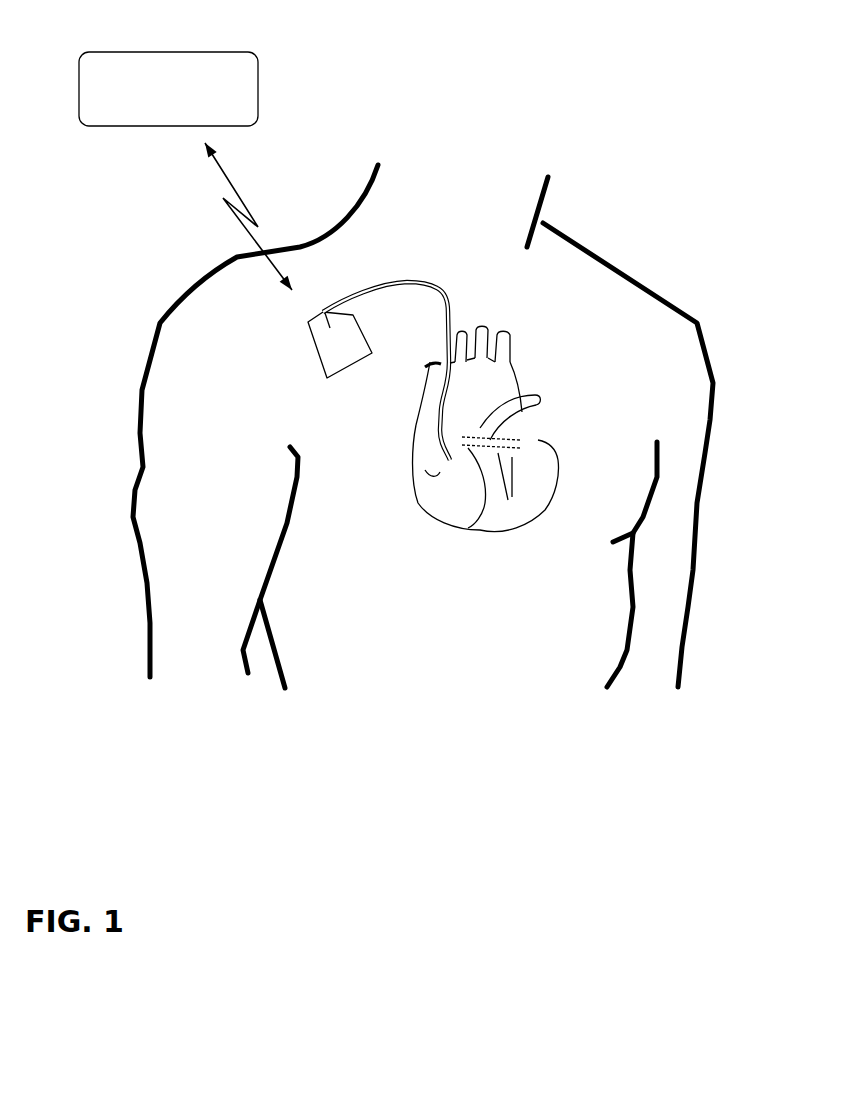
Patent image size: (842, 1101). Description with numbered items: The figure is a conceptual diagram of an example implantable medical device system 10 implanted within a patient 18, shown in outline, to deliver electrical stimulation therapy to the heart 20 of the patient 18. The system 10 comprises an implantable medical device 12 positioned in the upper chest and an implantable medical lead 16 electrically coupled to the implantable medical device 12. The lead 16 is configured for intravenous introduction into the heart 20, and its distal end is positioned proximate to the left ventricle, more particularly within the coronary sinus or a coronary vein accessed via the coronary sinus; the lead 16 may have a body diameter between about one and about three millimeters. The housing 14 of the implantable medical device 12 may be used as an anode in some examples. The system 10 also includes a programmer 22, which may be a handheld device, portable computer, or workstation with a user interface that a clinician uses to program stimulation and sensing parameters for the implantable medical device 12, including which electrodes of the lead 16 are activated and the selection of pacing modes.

The implantable medical device system 10 is at (669, 144).
The implantable medical device 12 is at (310, 346).
The housing 14 is at (340, 345).
The implantable medical lead 16 is at (442, 292).
The patient 18 is at (583, 248).
The heart 20 is at (545, 460).
The programmer 22 is at (137, 52).